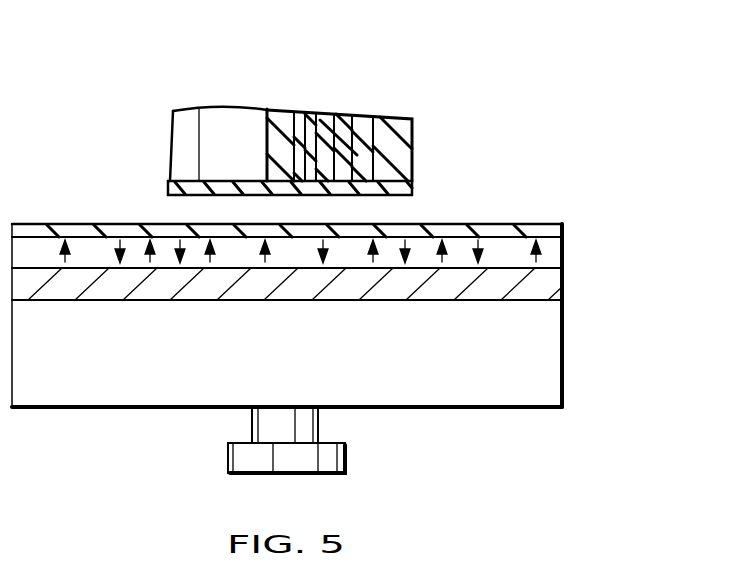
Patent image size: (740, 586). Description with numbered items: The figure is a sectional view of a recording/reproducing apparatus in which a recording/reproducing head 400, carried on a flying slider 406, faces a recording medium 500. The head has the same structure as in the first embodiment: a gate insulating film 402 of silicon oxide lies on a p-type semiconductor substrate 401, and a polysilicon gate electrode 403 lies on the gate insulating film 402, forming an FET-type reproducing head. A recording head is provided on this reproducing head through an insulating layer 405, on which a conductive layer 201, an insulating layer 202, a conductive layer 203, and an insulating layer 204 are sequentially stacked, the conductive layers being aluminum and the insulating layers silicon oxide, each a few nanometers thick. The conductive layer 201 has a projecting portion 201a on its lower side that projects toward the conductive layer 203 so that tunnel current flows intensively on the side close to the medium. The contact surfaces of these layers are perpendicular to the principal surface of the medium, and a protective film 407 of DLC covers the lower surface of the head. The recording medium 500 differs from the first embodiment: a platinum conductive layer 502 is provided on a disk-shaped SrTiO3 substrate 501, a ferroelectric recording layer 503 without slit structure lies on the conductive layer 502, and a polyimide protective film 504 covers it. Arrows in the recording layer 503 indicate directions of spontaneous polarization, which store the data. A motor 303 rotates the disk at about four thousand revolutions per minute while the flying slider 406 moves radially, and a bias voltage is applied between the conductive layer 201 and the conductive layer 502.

The recording/reproducing head 400 is at (302, 112).
The semiconductor substrate 401 is at (208, 106).
The gate insulating film 402 is at (268, 109).
The gate electrode 403 is at (288, 110).
The insulating layer 405 is at (302, 110).
The flying slider 406 is at (183, 109).
The protective film 407 is at (170, 189).
The conductive layer 201 is at (317, 110).
The projecting portion 201a is at (328, 176).
The insulating layer 202 is at (340, 113).
The conductive layer 203 is at (371, 115).
The insulating layer 204 is at (397, 116).
The recording medium 500 is at (319, 344).
The substrate 501 is at (543, 350).
The conductive layer 502 is at (543, 285).
The recording layer 503 is at (543, 250).
The protective film 504 is at (545, 231).
The motor 303 is at (243, 457).